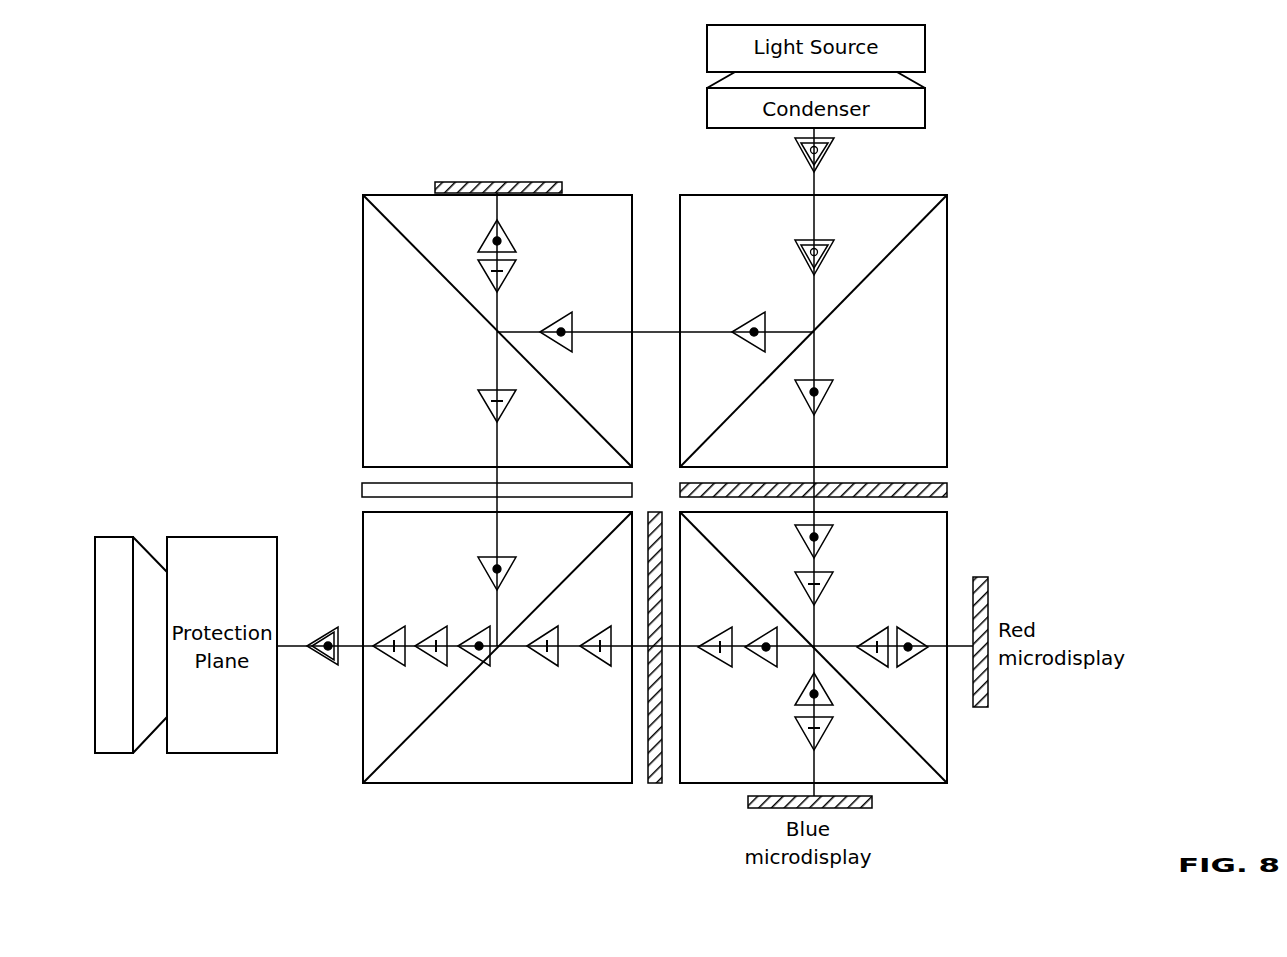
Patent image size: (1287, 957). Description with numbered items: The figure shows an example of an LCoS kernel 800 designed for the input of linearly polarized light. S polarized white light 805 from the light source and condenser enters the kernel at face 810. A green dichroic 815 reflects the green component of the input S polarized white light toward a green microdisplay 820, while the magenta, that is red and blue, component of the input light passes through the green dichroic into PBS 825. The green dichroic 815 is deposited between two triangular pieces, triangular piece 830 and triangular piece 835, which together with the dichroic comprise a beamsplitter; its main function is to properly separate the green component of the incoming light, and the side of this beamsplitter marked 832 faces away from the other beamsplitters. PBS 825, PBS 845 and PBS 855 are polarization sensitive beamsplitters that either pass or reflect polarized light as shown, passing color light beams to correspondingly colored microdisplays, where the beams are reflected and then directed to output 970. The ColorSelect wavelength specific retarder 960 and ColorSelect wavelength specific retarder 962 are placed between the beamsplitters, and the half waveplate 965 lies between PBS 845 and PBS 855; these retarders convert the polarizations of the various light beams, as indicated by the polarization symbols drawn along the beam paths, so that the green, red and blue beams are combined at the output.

The LCoS kernel 800 is at (1000, 176).
The S polarized white light 805 is at (797, 150).
The face 810 is at (918, 195).
The green dichroic 815 is at (905, 238).
The green microdisplay 820 is at (500, 181).
The PBS 825 is at (940, 739).
The triangular piece 830 is at (856, 398).
The output face of green dichroic beam splitter 832 is at (940, 381).
The triangular piece 835 is at (764, 286).
The PBS 845 is at (362, 334).
The PBS 855 is at (413, 775).
The ColorSelect wavelength specific retarder 960 is at (947, 485).
The ColorSelect wavelength specific retarder 962 is at (651, 784).
The half waveplate 965 is at (361, 491).
The output 970 is at (331, 633).